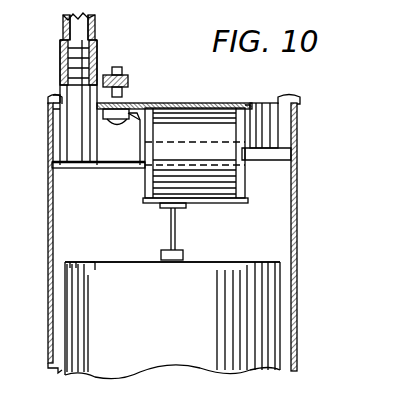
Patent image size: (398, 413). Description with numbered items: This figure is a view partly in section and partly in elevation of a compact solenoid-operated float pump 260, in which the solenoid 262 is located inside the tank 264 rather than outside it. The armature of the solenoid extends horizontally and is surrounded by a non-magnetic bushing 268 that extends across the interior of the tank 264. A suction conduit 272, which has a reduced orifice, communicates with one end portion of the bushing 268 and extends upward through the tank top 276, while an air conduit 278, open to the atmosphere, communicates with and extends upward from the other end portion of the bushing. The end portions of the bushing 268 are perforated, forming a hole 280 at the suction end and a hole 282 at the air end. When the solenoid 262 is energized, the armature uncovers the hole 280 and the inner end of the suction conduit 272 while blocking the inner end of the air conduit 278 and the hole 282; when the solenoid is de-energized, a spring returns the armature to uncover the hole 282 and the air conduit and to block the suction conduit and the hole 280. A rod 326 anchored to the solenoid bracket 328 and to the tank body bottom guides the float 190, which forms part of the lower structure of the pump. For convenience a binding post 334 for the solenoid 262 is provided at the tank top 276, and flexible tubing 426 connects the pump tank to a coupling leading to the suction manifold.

The float 190 is at (128, 262).
The solenoid-operated float pump 260 is at (310, 243).
The solenoid 262 is at (216, 193).
The tank 264 is at (300, 288).
The non-magnetic bushing 268 is at (106, 168).
The suction conduit 272 is at (62, 92).
The tank top 276 is at (196, 104).
The air conduit 278 is at (263, 104).
The hole 280 is at (52, 158).
The hole 282 is at (293, 155).
The rod 326 is at (168, 226).
The solenoid bracket 328 is at (150, 202).
The binding post 334 is at (114, 67).
The flexible tubing 426 is at (63, 34).